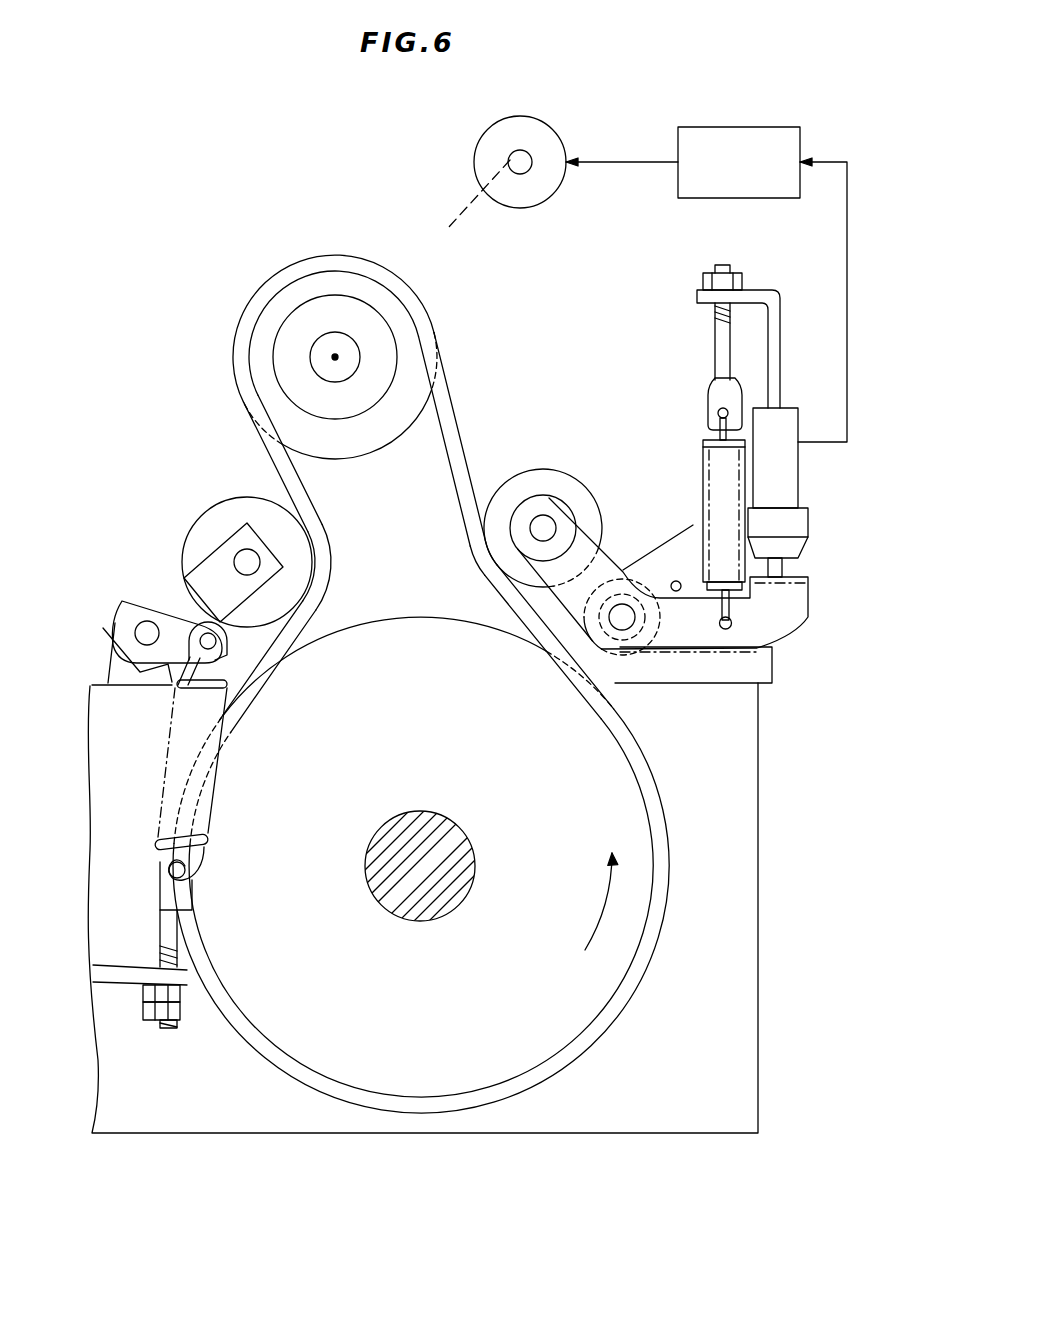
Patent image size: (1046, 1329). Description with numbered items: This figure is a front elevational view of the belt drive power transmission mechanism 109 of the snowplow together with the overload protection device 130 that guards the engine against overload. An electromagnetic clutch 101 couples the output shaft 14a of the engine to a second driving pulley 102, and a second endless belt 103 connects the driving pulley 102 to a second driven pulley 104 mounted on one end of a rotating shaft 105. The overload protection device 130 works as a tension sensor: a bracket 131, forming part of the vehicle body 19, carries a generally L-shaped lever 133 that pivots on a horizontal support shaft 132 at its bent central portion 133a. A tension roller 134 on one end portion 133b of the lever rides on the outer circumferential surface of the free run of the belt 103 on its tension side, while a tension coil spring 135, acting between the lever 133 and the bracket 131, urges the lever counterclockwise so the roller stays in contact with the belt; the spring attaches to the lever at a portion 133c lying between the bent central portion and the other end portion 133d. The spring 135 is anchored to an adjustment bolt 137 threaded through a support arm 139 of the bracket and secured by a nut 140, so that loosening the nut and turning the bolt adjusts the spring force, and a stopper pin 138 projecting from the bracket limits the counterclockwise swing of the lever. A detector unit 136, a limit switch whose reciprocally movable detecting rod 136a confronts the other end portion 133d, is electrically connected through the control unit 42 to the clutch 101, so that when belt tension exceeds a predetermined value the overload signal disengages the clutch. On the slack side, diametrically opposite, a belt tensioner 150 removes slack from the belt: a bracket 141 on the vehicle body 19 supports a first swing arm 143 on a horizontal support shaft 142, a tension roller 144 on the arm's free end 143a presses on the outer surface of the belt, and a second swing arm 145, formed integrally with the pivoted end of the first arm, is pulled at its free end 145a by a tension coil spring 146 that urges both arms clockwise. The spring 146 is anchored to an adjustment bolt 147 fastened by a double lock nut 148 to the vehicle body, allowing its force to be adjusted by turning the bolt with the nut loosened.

The output shaft 14a is at (508, 160).
The vehicle body 19 is at (762, 1000).
The control unit 42 is at (765, 132).
The electromagnetic clutch 101 is at (532, 132).
The second driving pulley 102 is at (292, 295).
The second endless belt 103 is at (455, 403).
The second driven pulley 104 is at (590, 978).
The rotating shaft 105 is at (428, 892).
The belt drive power transmission mechanism 109 is at (262, 200).
The overload protection device 130 is at (713, 703).
The bracket 131 is at (763, 663).
The horizontal support shaft 132 is at (622, 620).
The lever 133 is at (679, 655).
The bent central portion 133a is at (590, 632).
The one end portion 133b is at (548, 523).
The lever bracket 133c is at (733, 648).
The other end portion 133d is at (808, 582).
The tension roller 134 is at (525, 500).
The tension coil spring 135 is at (703, 500).
The detector unit 136 is at (798, 478).
The detecting rod 136a is at (780, 565).
The adjustment bolt 137 is at (723, 357).
The stopper pin 138 is at (676, 581).
The support arm 139 is at (776, 360).
The nut 140 is at (742, 283).
The bracket 141 is at (112, 637).
The horizontal support shaft 142 is at (147, 633).
The first swing arm 143 is at (176, 590).
The free end 143a is at (225, 557).
The tension roller 144 is at (250, 510).
The second swing arm 145 is at (143, 613).
The hook plate 145a is at (228, 686).
The tension coil spring 146 is at (213, 793).
The adjustment bolt 147 is at (177, 902).
The double lock nut 148 is at (178, 1020).
The belt tensioner 150 is at (140, 440).